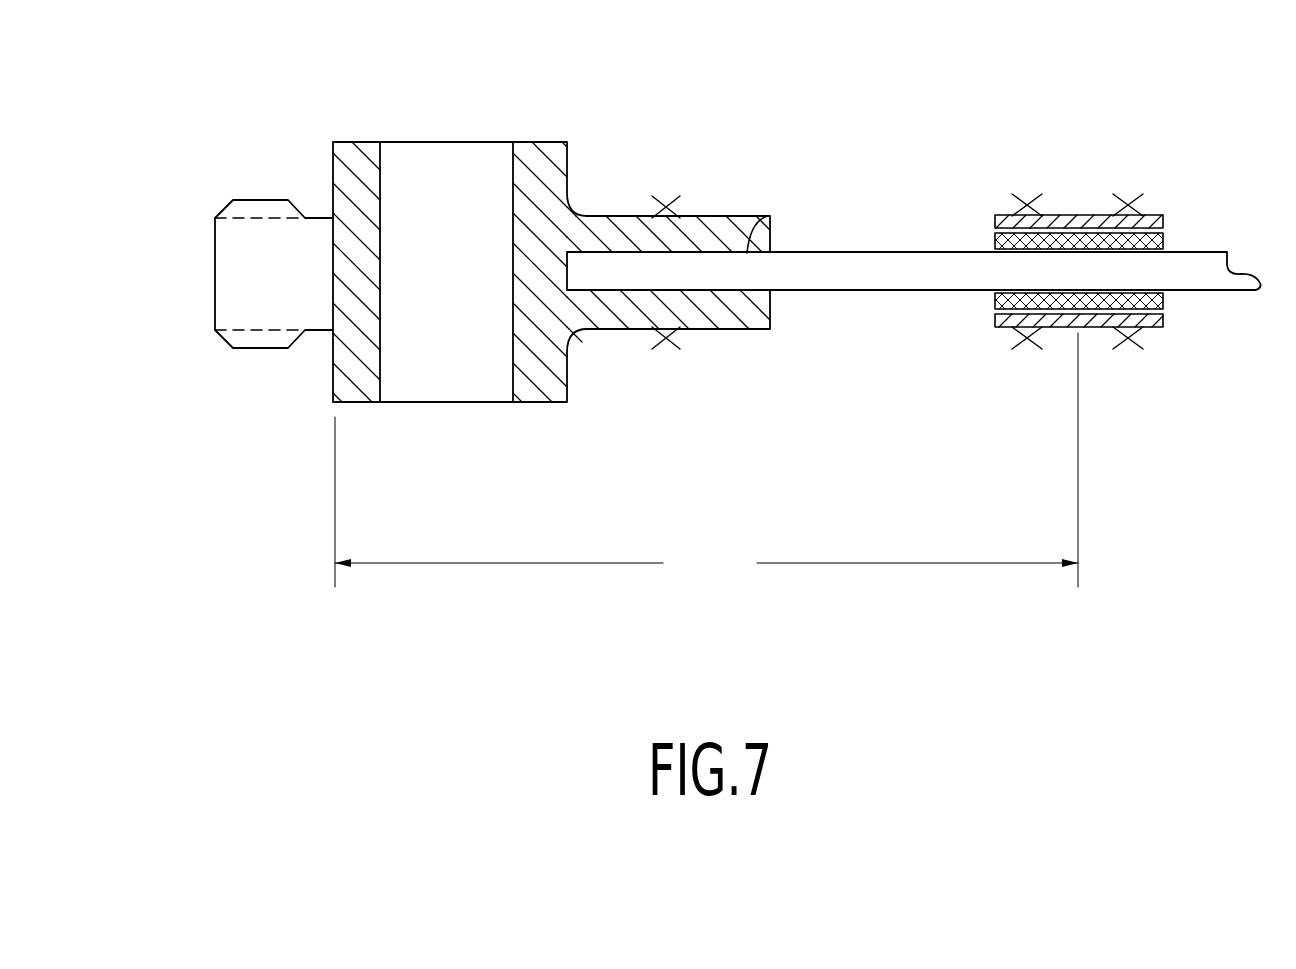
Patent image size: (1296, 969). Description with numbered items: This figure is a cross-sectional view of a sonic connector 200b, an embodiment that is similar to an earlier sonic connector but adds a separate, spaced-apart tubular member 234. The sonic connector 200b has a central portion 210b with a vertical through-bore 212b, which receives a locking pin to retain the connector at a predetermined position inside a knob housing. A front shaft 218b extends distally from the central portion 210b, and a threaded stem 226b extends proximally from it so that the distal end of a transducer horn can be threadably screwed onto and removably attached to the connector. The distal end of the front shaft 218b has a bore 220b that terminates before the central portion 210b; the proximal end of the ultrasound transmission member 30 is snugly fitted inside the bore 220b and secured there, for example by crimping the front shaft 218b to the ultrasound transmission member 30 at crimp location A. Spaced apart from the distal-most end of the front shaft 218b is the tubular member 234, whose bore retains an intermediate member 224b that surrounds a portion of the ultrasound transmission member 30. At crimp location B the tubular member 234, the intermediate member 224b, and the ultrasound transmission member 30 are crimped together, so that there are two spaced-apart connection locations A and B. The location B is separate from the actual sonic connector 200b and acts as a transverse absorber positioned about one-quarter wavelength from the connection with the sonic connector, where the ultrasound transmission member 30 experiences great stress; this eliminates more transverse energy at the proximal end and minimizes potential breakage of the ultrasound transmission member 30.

The sonic connector 200b is at (740, 662).
The central portion 210b is at (522, 112).
The vertical through-bore 212b is at (448, 364).
The front shaft 218b is at (722, 225).
The bore 220b is at (763, 216).
The ultrasound transmission member 30 is at (867, 262).
The tubular member 234 is at (1068, 215).
The intermediate member 224b is at (1163, 240).
The threaded stem 226b is at (237, 292).
The crimp location A is at (668, 213).
The crimp location B is at (1030, 200).